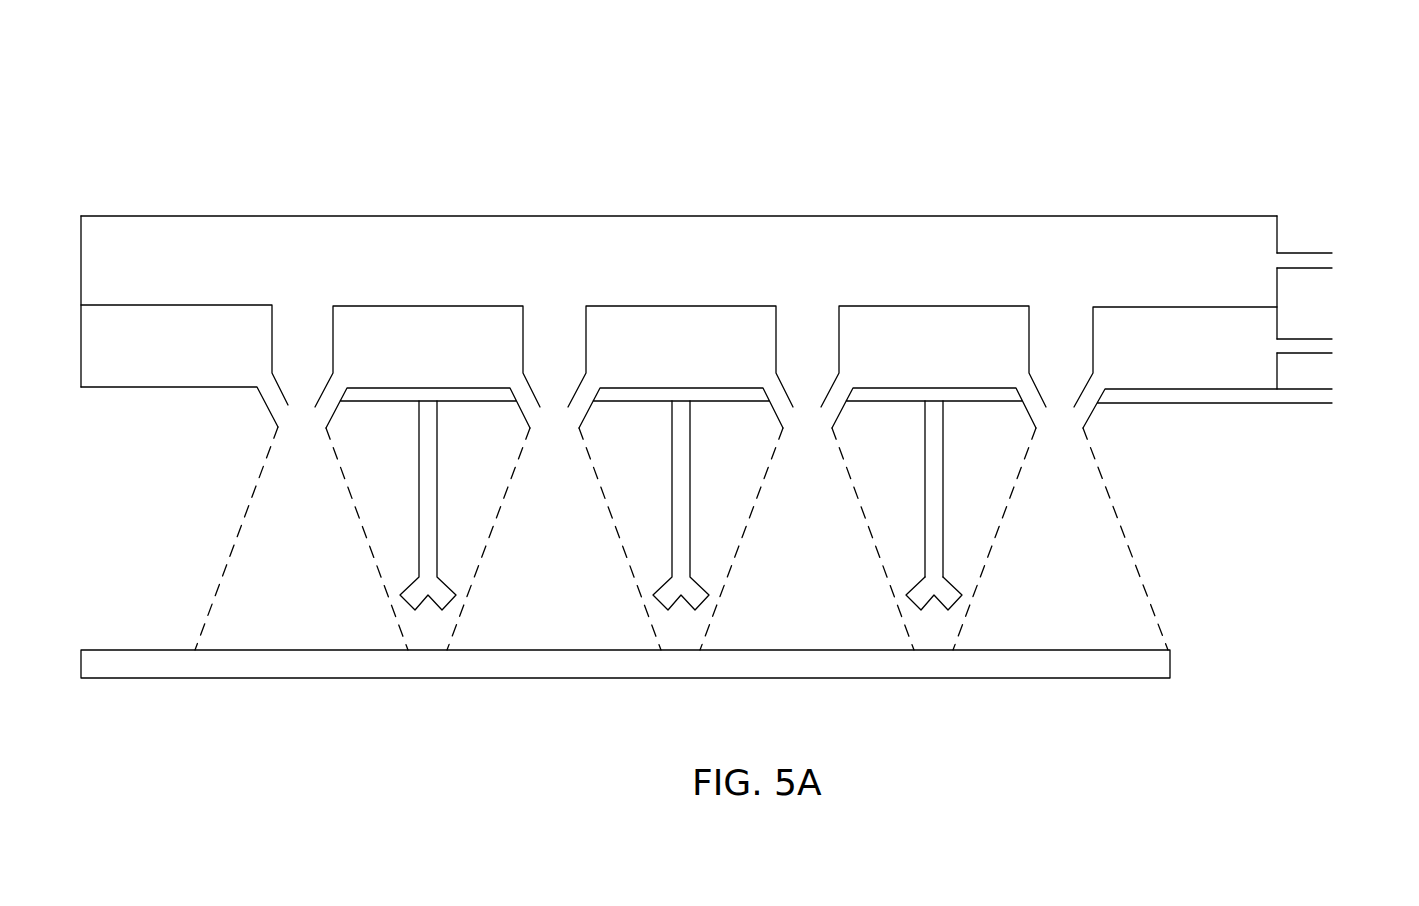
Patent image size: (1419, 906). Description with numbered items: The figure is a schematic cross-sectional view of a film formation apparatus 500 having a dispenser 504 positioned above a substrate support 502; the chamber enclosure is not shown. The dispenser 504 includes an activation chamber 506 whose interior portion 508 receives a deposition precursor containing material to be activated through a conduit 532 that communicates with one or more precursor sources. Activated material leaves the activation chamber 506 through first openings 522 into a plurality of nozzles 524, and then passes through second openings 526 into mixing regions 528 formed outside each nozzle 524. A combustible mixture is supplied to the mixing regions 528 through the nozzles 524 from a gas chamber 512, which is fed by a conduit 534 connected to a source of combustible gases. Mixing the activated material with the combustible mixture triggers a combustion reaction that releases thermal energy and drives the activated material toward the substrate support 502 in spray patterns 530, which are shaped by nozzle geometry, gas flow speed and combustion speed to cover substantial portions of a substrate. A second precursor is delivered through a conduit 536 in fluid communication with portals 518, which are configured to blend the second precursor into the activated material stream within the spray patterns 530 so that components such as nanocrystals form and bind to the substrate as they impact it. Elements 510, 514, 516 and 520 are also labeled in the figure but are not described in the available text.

The film formation apparatus 500 is at (1120, 75).
The substrate support 502 is at (1133, 678).
The dispenser 504 is at (166, 195).
The activation chamber 506 is at (807, 217).
The interior portion 508 is at (667, 273).
The end wall block 510 is at (132, 388).
The gas chamber 512 is at (703, 351).
The lower wall 514 is at (1173, 403).
The vent stem 516 is at (943, 460).
The portals 518 is at (940, 608).
The spray cone 520 is at (1137, 563).
The first openings 522 is at (1063, 312).
The nozzles 524 is at (1093, 340).
The second openings 526 is at (1060, 403).
The mixing regions 528 is at (807, 407).
The spray patterns 530 is at (569, 562).
The conduit 532 is at (1330, 262).
The conduit 534 is at (1330, 347).
The conduit 536 is at (1330, 397).